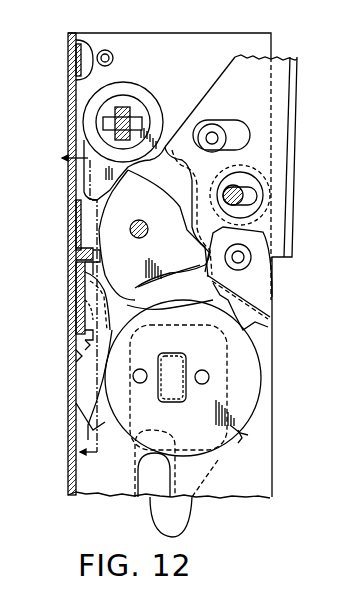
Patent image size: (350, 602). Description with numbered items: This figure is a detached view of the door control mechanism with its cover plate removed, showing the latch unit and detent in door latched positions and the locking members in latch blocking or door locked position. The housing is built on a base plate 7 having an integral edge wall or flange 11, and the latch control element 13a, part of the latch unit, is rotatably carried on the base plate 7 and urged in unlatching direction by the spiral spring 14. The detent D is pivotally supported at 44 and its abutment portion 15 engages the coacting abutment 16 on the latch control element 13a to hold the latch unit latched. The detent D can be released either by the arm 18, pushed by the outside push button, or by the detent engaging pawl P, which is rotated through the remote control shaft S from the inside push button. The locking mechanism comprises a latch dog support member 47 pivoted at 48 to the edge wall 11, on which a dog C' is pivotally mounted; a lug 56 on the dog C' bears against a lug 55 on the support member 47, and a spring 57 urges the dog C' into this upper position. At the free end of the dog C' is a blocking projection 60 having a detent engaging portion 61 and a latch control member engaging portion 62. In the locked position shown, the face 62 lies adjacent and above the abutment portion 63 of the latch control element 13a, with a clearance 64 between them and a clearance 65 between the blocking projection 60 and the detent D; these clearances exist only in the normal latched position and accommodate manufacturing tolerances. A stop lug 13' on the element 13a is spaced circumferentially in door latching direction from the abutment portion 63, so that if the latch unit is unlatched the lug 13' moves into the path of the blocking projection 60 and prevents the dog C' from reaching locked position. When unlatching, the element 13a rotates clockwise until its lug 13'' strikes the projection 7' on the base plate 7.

The base plate 7 is at (169, 35).
The latch dog support member 47 is at (68, 85).
The pivot 48 is at (68, 57).
The edge wall 11 is at (68, 112).
The detent engaging pawl P is at (84, 130).
The remote control shaft S is at (125, 106).
The arm 18 is at (283, 127).
The detent D is at (150, 194).
The pivotal support of detent 44 is at (148, 229).
The lug 55 is at (70, 243).
The spring 57 is at (72, 265).
The detent engaging portion 61 is at (74, 285).
The lug 56 is at (97, 259).
The clearance 65 is at (105, 288).
The abutment portion 15 is at (138, 292).
The abutment 16 is at (128, 307).
The dog C' is at (67, 309).
The blocking projection 60 is at (72, 331).
The latch control member engaging portion 62 is at (76, 343).
The clearance 64 is at (76, 370).
The abutment portion 63 is at (94, 340).
The stop lug 13' is at (72, 413).
The latch control element 13a is at (255, 365).
The lug 13'' is at (251, 451).
The projection 7' is at (176, 483).
The spiral spring 14 is at (47, 169).